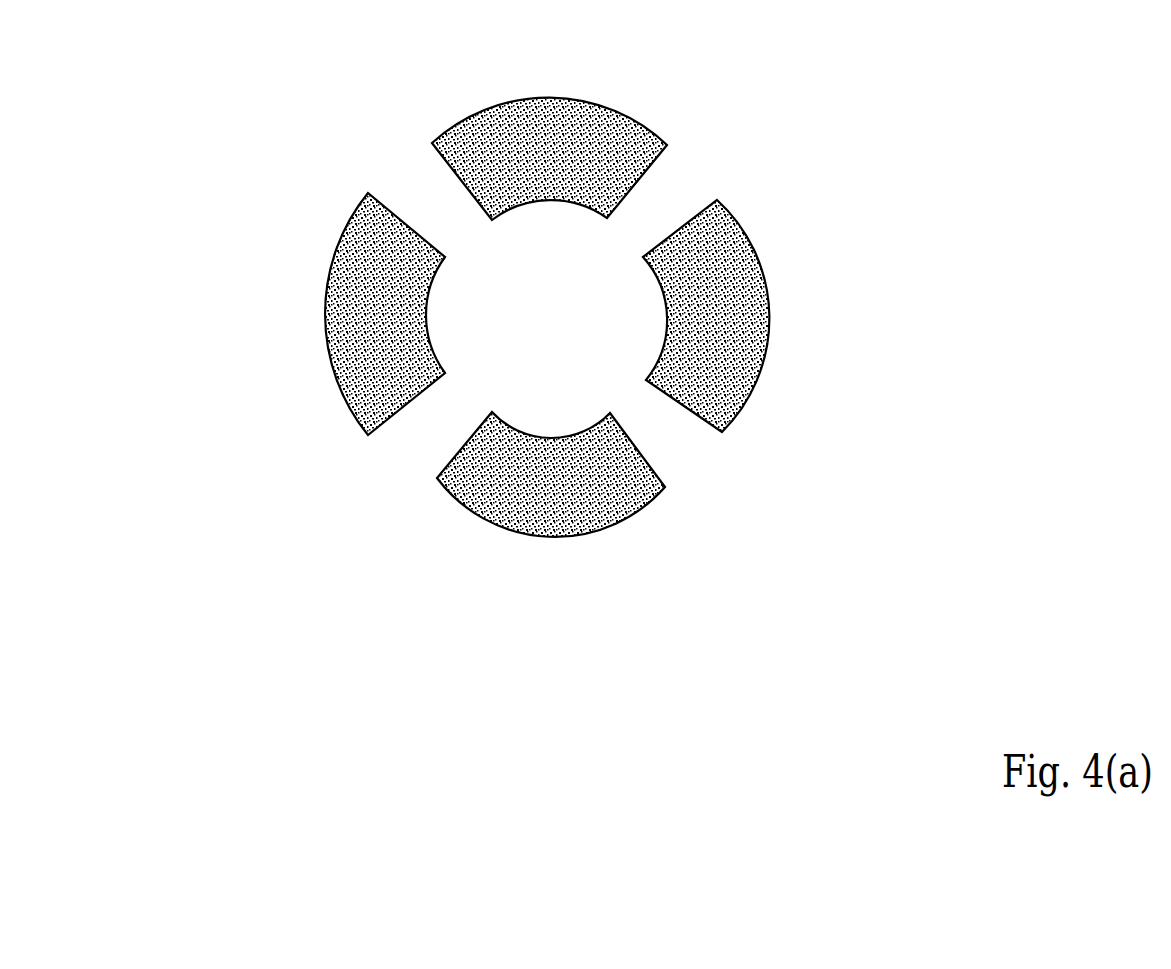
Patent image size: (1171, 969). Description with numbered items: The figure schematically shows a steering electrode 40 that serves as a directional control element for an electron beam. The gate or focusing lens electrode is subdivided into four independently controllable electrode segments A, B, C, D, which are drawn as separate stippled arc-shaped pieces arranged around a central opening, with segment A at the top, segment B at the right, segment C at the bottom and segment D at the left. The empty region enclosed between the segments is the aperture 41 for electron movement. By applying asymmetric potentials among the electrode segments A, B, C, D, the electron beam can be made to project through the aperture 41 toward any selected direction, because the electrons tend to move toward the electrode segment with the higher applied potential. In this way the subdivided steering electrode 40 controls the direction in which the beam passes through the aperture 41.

The steering electrode 40 is at (553, 89).
The aperture 41 is at (578, 303).
The electrode segment A is at (612, 137).
The electrode segment B is at (715, 250).
The electrode segment C is at (612, 523).
The electrode segment D is at (332, 370).